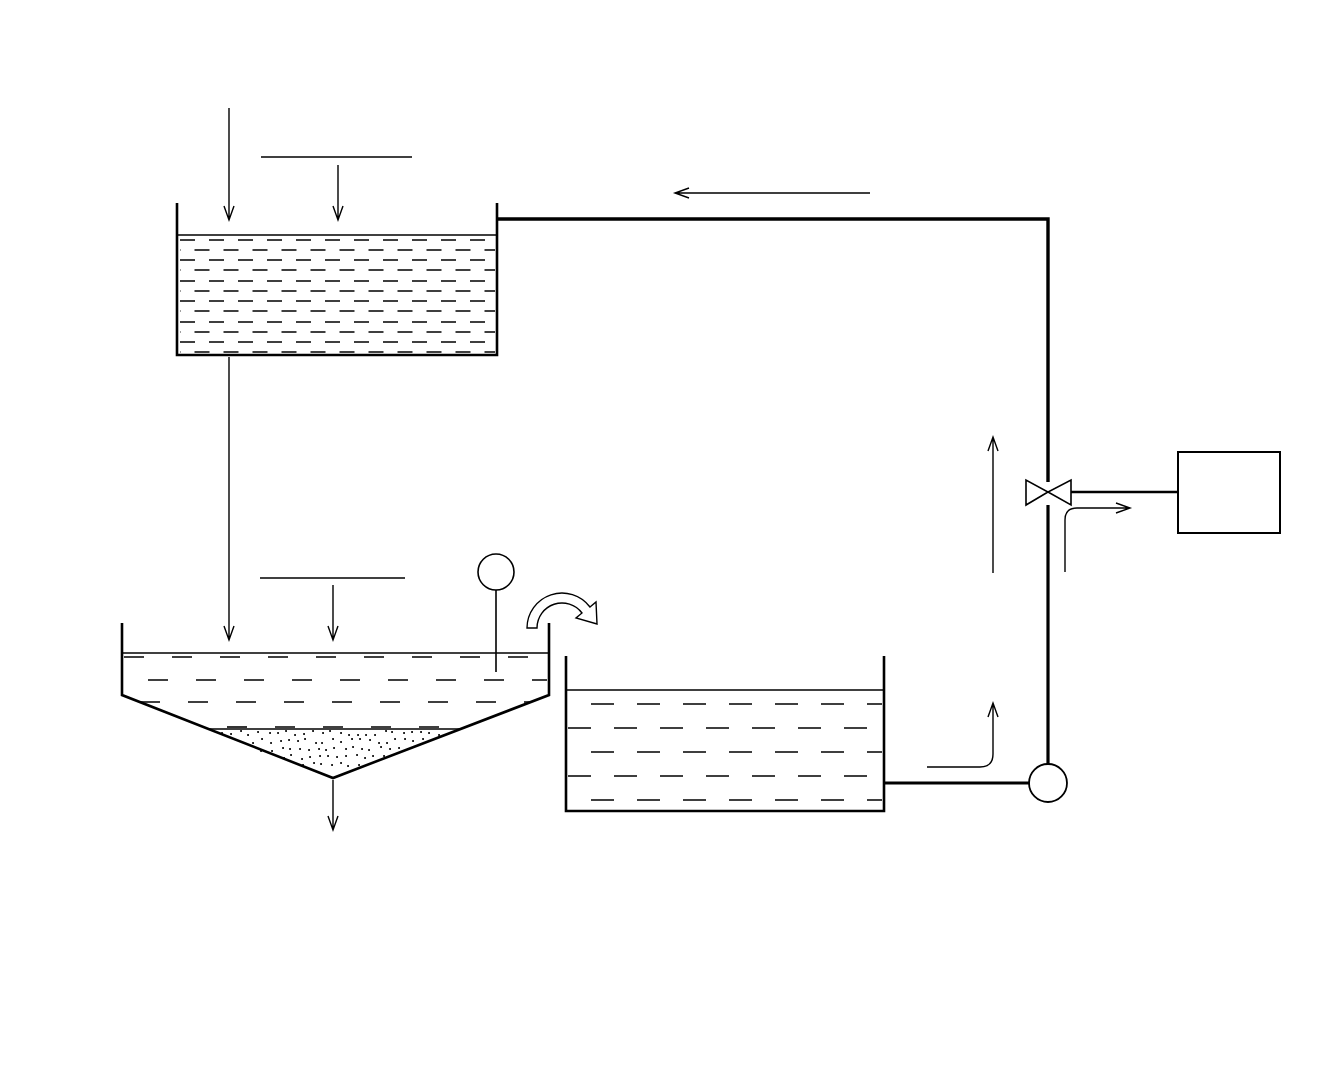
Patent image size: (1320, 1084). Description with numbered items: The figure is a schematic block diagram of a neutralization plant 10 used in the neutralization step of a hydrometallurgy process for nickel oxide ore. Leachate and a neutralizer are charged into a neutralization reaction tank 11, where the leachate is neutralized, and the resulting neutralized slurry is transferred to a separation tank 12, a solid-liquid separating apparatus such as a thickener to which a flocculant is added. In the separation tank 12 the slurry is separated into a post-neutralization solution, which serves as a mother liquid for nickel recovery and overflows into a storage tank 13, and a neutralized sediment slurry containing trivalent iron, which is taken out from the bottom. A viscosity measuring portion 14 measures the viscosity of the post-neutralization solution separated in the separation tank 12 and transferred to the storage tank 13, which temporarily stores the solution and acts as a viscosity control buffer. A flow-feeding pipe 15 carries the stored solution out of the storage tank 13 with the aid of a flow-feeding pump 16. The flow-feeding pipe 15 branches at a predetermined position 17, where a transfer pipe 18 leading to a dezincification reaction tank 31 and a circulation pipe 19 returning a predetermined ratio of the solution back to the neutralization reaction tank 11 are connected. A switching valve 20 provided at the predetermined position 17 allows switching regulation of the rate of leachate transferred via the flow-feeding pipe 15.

The neutralization plant 10 is at (777, 104).
The neutralization reaction tank 11 is at (497, 288).
The separation tank 12 is at (175, 718).
The storage tank 13 is at (725, 812).
The viscosity measuring portion 14 is at (496, 553).
The flow-feeding pipe 15 is at (965, 785).
The flow-feeding pump 16 is at (1067, 783).
The predetermined position 17 is at (1071, 462).
The transfer pipe 18 is at (1122, 490).
The circulation pipe 19 is at (1049, 257).
The switching valve 20 is at (1040, 486).
The dezincification reaction tank 31 is at (1228, 452).